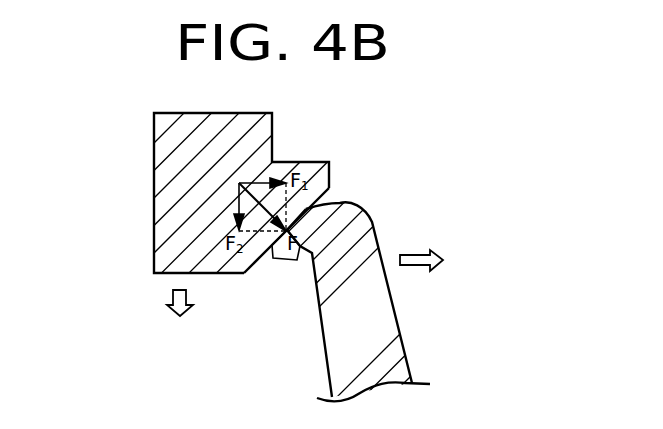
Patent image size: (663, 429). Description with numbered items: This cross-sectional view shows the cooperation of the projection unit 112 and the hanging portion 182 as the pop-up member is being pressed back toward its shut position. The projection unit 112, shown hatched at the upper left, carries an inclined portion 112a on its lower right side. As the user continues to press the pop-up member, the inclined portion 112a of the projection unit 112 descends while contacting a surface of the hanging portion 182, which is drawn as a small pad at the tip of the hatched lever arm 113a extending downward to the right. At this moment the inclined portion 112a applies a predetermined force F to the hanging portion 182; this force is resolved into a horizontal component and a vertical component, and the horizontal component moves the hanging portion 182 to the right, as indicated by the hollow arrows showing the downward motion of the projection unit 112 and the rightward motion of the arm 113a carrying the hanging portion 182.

The projection unit 112 is at (170, 201).
The inclined portion 112a is at (325, 203).
The clamp arm 113a is at (348, 215).
The hanging portion 182 is at (298, 254).